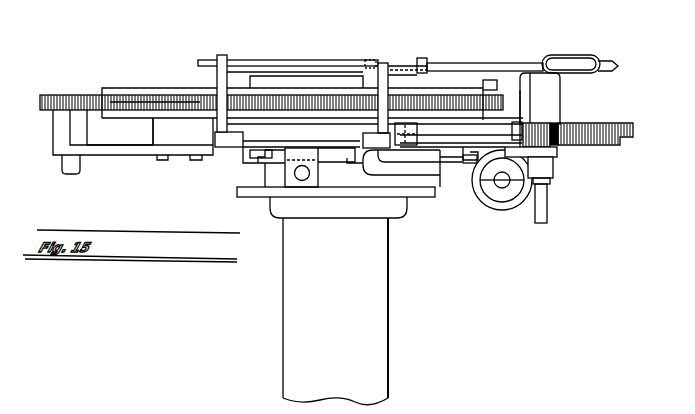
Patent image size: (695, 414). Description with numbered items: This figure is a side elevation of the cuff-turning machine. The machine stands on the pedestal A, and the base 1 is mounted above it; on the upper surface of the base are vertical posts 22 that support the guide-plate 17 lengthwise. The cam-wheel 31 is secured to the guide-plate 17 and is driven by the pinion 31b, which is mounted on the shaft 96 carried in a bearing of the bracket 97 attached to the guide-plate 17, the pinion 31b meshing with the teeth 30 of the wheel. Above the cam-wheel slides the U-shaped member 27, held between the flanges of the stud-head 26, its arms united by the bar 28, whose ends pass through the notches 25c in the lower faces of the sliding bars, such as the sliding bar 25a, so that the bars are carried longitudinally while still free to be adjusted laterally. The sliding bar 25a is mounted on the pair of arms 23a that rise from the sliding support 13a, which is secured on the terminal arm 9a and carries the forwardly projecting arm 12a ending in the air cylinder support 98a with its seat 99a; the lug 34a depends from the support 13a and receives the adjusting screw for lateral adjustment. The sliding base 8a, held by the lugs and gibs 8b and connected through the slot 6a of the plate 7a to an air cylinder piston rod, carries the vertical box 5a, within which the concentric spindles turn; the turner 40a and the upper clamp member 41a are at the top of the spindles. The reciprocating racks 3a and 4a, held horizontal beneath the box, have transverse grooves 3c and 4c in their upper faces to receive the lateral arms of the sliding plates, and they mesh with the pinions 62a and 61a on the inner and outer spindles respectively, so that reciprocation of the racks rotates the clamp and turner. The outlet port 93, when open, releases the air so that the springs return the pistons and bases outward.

The base 1 is at (375, 193).
The pedestal A is at (373, 322).
The reciprocating rack 3a is at (590, 143).
The transverse groove 3c is at (517, 135).
The reciprocating rack 4a is at (615, 127).
The transverse groove 4c is at (520, 124).
The vertical box 5a is at (560, 100).
The slot 6a is at (547, 185).
The plate 7a is at (501, 181).
The sliding base 8a is at (535, 152).
The lugs and gibs 8b is at (462, 158).
The terminal arm 9a is at (262, 155).
The arm 12a is at (464, 165).
The sliding support 13a is at (232, 145).
The guide-plate 17 is at (190, 136).
The vertical post 22 is at (422, 181).
The arms 23a is at (218, 72).
The sliding bar 25a is at (258, 60).
The notch 25c is at (368, 60).
The stud-head 26 is at (313, 80).
The U-shaped member 27 is at (497, 72).
The bar 28 is at (384, 64).
The teeth 30 is at (153, 93).
The cam-wheel 31 is at (114, 92).
The pinion 31b is at (68, 93).
The lug 34a is at (292, 166).
The turner 40a is at (570, 58).
The upper clamp member 41a is at (608, 64).
The pinion 61a is at (560, 123).
The pinion 62a is at (557, 155).
The outlet port 93 is at (60, 132).
The shaft 96 is at (62, 166).
The bracket 97 is at (140, 152).
The air cylinder support 98a is at (500, 182).
The seat 99a is at (512, 187).